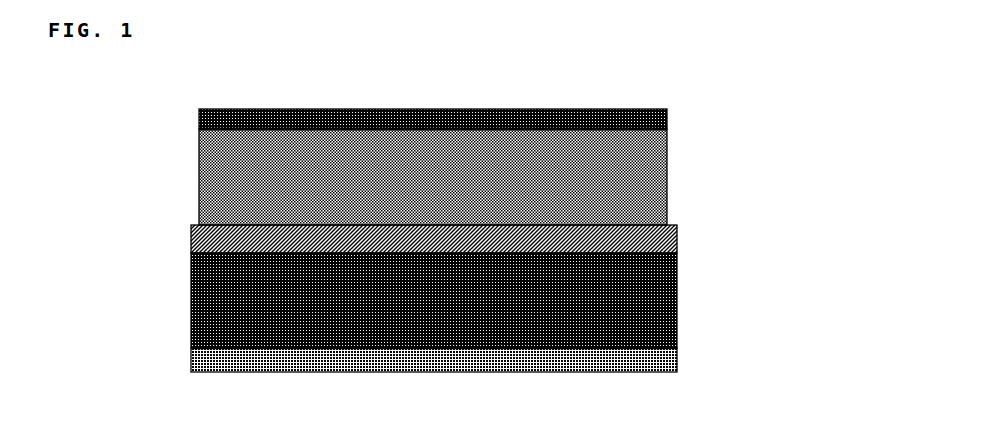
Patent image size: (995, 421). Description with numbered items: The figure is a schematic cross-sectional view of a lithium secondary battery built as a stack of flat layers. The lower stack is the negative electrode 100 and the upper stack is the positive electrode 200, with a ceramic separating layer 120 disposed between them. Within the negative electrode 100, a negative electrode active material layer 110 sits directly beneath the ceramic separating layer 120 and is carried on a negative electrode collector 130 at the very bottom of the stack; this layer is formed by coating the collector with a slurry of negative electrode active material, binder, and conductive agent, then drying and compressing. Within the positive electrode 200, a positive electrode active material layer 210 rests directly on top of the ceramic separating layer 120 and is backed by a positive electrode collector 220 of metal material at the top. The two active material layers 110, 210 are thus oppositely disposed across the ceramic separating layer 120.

The negative electrode 100 is at (460, 285).
The negative electrode active material layer 110 is at (677, 305).
The ceramic separating layer 120 is at (677, 240).
The negative electrode collector 130 is at (677, 360).
The positive electrode 200 is at (454, 154).
The positive electrode active material layer 210 is at (667, 179).
The positive electrode collector 220 is at (667, 122).